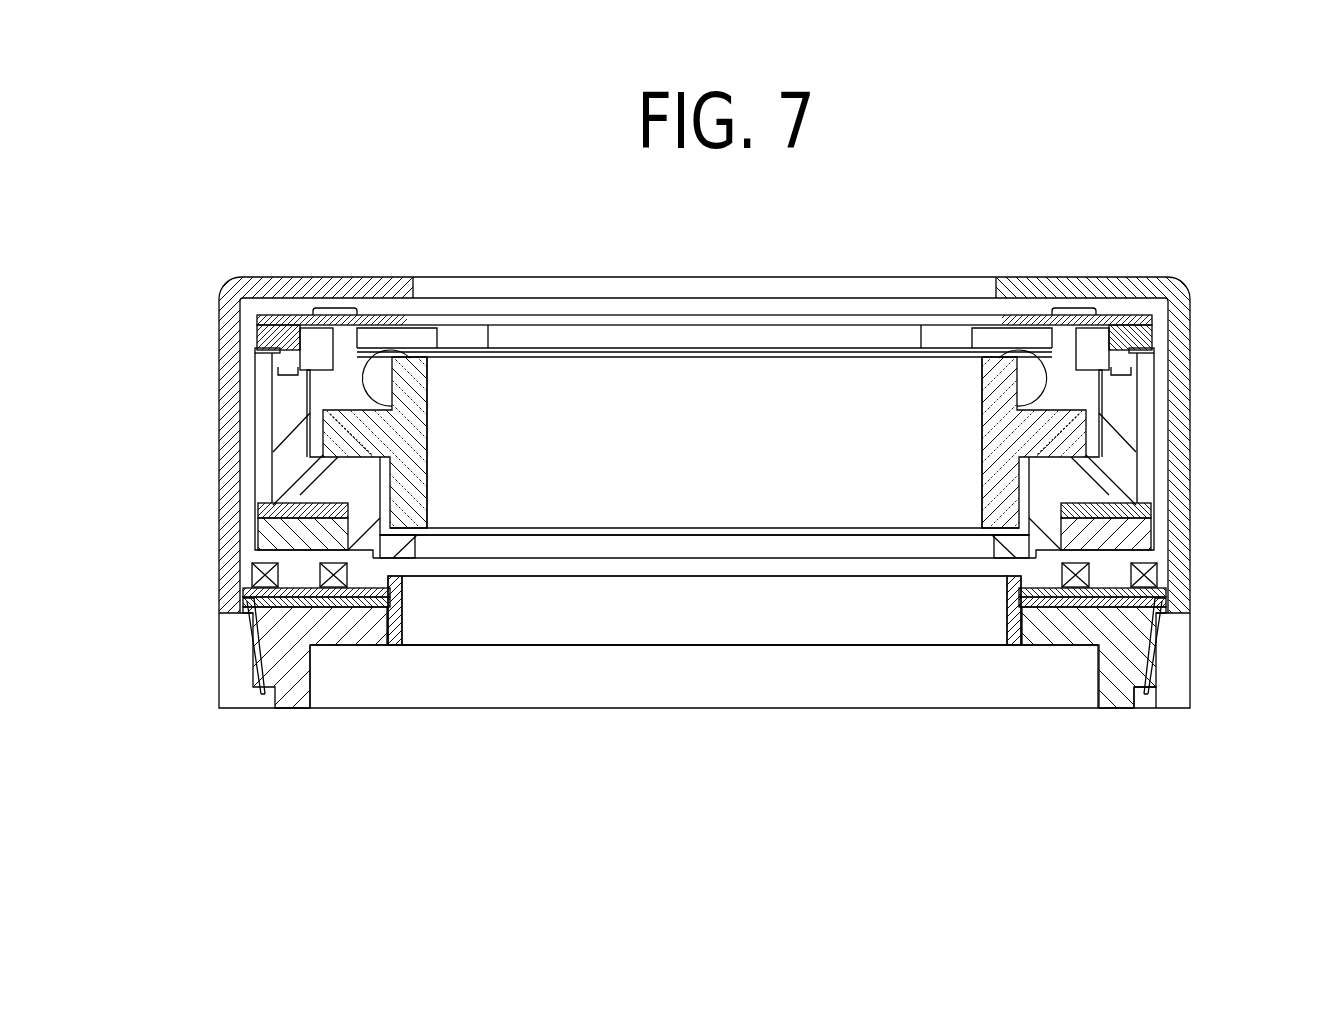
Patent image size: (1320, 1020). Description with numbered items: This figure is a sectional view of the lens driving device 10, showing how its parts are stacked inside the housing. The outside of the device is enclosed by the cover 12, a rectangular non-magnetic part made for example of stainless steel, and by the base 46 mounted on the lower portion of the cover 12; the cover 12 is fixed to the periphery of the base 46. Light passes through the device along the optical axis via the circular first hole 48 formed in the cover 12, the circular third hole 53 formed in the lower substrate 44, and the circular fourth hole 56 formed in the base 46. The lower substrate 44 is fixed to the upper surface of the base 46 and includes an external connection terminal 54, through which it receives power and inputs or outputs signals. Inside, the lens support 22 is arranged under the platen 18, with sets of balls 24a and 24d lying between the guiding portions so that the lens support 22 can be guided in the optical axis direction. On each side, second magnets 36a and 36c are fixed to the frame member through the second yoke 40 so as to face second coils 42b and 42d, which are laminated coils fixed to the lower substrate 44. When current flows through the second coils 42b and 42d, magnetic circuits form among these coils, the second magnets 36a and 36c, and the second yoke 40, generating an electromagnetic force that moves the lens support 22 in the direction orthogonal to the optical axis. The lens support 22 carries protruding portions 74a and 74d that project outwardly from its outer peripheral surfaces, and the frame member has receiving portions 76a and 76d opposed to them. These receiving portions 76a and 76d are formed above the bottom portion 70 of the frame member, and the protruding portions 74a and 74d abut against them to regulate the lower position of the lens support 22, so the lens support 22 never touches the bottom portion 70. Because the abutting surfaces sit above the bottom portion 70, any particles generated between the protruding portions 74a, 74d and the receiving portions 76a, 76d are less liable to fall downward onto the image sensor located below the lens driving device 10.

The lens driving device 10 is at (1160, 203).
The cover 12 is at (1182, 363).
The platen 18 is at (1147, 338).
The lens support 22 is at (988, 450).
The ball 24a is at (1034, 367).
The ball 24d is at (380, 357).
The second magnet 36a is at (1145, 537).
The second magnet 36c is at (267, 532).
The second yoke 40 is at (290, 507).
The second coil 42b is at (1153, 577).
The second coil 42d is at (252, 577).
The lower substrate 44 is at (1113, 597).
The base 46 is at (1133, 642).
The first hole 48 is at (410, 287).
The third hole 53 is at (392, 597).
The external connection terminal 54 is at (1152, 678).
The fourth hole 56 is at (410, 633).
The bottom portion 70 is at (1003, 550).
The protruding portion 74a is at (1070, 423).
The protruding portion 74d is at (342, 423).
The receiving portion 76a is at (1067, 450).
The receiving portion 76d is at (337, 445).